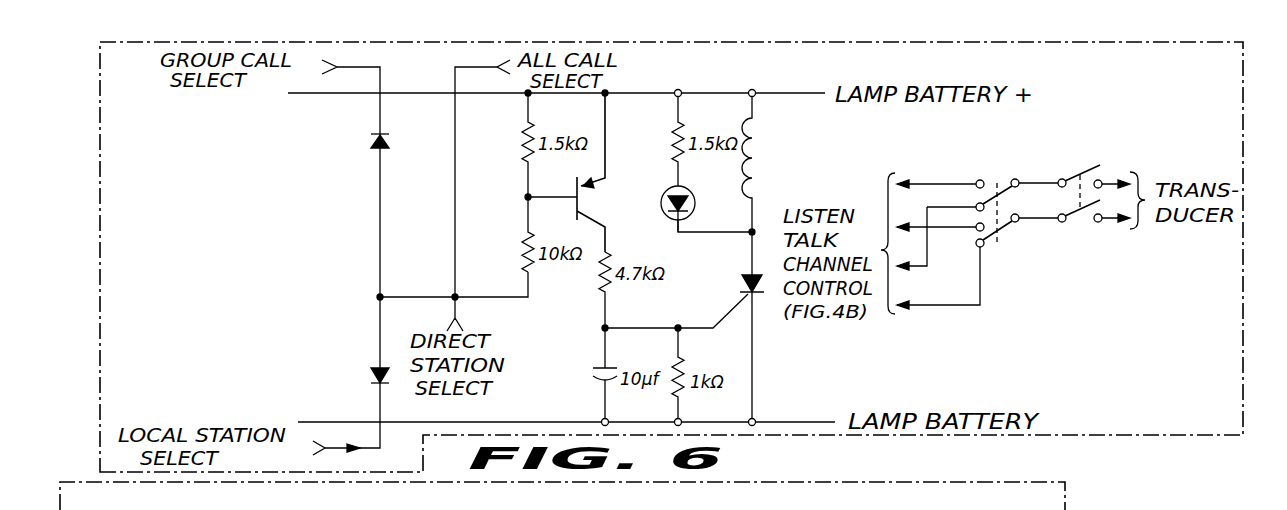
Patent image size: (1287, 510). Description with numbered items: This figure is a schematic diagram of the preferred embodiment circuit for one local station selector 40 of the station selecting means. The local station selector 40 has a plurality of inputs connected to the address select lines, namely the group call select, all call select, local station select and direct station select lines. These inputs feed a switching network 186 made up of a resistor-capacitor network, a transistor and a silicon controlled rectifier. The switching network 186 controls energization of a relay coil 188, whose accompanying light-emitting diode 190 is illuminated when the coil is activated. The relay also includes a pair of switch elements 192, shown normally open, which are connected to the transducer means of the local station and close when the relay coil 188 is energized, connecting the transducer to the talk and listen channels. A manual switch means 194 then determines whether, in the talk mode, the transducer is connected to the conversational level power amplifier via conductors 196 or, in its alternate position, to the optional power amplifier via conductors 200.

The local station selector 40 is at (100, 186).
The switching network 186 is at (590, 309).
The relay coil 188 is at (752, 158).
The light-emitting diode 190 is at (663, 192).
The switch elements 192 is at (1081, 232).
The manual switch means 194 is at (1003, 242).
The conductors 196 is at (921, 271).
The conductors 200 is at (921, 224).